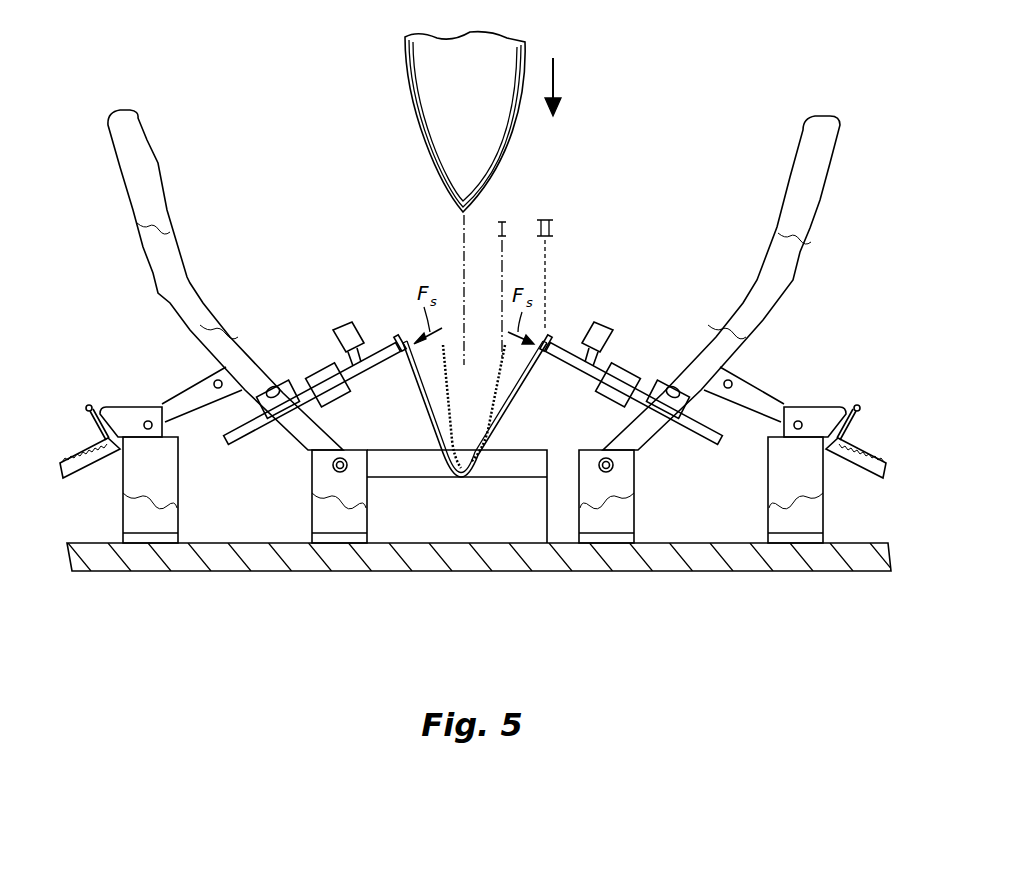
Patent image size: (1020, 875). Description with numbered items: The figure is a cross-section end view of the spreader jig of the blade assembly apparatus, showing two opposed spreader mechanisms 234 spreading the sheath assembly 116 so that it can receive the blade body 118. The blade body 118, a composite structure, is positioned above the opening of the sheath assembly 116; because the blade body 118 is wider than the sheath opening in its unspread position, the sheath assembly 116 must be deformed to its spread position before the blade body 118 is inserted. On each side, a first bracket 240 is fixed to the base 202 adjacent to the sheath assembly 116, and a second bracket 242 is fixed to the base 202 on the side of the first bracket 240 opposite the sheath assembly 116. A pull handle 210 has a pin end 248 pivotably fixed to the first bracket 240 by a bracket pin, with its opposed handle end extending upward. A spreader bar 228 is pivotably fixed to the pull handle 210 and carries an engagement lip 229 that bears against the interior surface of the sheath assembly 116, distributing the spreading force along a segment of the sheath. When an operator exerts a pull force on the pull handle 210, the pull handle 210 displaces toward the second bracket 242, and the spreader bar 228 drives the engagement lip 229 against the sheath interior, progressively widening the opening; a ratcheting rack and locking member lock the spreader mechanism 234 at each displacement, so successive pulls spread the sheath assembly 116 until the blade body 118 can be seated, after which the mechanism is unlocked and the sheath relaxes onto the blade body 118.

The sheath assembly 116 is at (456, 480).
The blade body 118 is at (405, 99).
The base 202 is at (207, 550).
The pull handle 210 is at (808, 195).
The spreader bar 228 is at (640, 362).
The engagement lip 229 is at (560, 343).
The spreader mechanism 234 is at (718, 297).
The first bracket 240 is at (603, 523).
The second bracket 242 is at (793, 522).
The pin end 248 is at (615, 470).